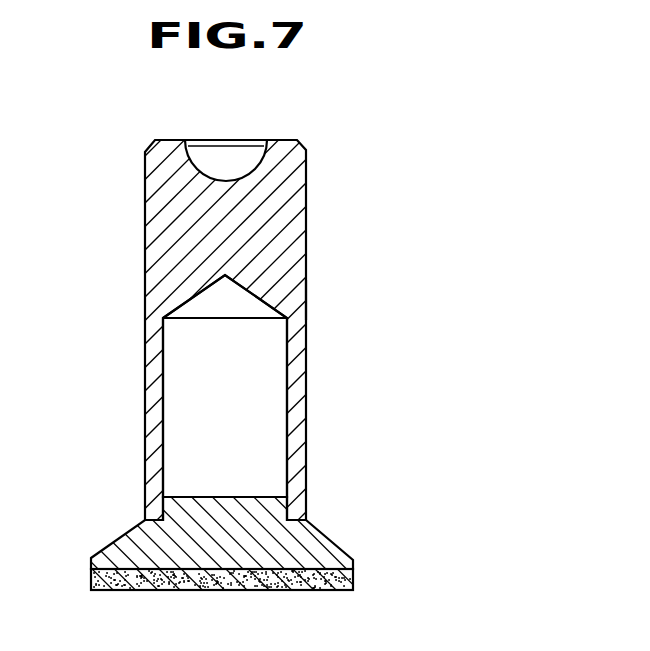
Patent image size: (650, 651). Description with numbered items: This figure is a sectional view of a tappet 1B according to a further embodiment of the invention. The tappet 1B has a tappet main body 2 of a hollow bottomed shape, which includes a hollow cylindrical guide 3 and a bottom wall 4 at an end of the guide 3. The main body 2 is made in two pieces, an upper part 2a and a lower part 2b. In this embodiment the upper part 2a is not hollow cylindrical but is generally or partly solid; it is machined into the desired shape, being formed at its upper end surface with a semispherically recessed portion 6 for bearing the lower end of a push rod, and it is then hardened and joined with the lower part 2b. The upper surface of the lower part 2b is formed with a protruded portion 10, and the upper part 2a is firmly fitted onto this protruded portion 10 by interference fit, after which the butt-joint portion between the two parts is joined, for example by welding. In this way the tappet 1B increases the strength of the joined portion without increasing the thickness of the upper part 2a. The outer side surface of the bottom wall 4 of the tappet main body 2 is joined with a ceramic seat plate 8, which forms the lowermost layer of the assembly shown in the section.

The tappet 1B is at (246, 325).
The tappet main body 2 is at (233, 325).
The upper part 2a is at (304, 298).
The lower part 2b is at (226, 425).
The hollow cylindrical guide 3 is at (306, 255).
The bottom wall 4 is at (238, 557).
The recessed portion 6 is at (228, 179).
The ceramic seat plate 8 is at (302, 591).
The protruded portion 10 is at (205, 496).